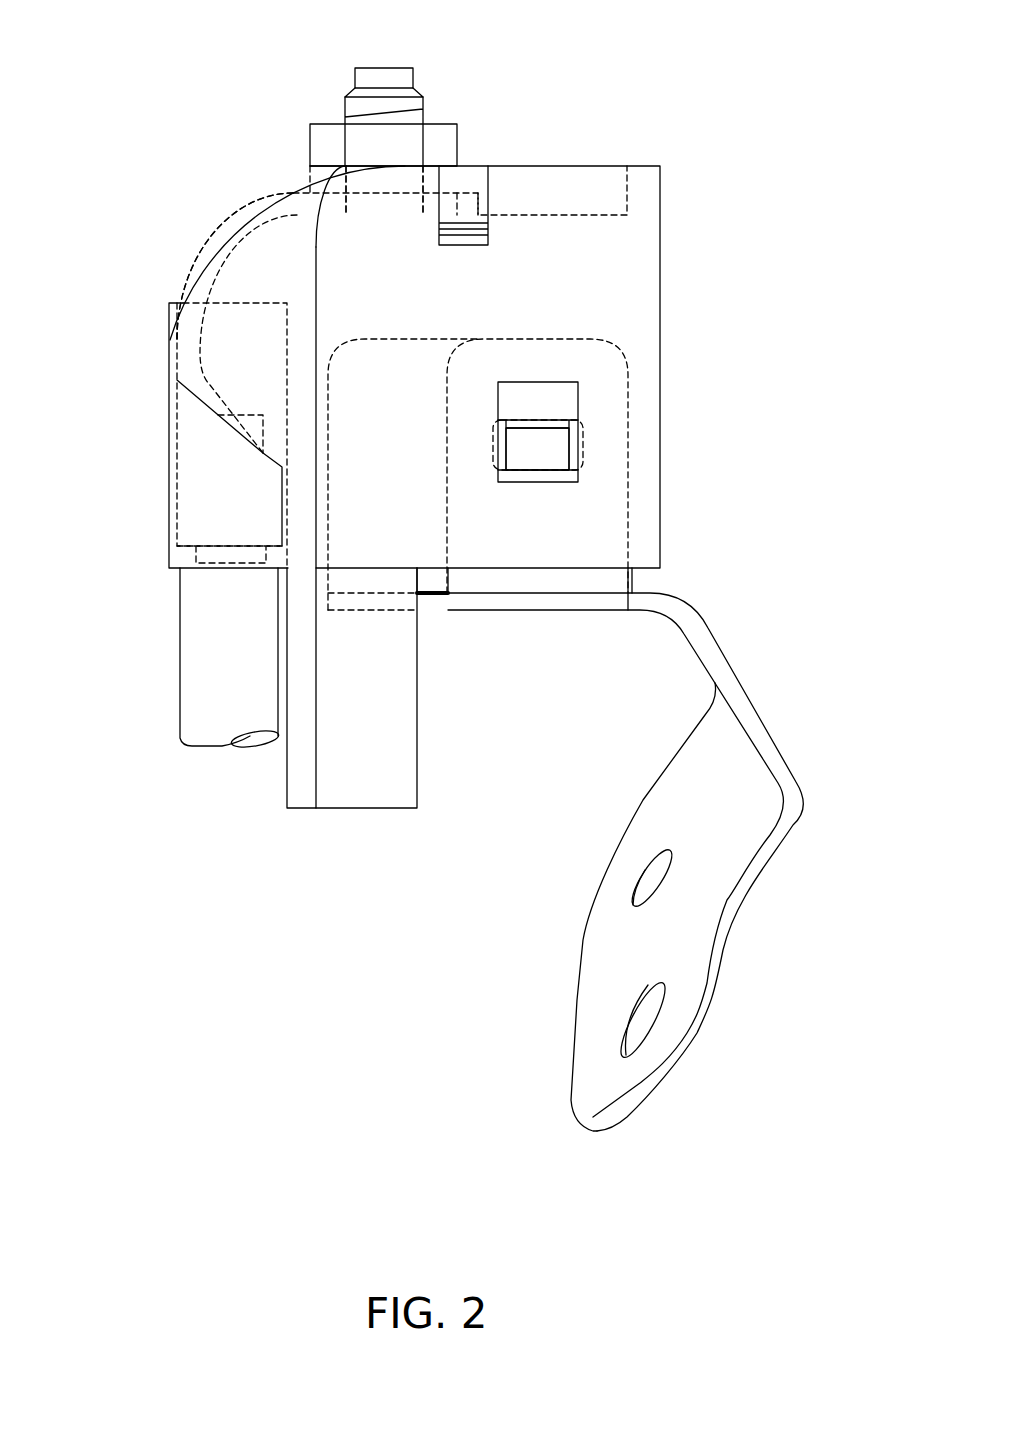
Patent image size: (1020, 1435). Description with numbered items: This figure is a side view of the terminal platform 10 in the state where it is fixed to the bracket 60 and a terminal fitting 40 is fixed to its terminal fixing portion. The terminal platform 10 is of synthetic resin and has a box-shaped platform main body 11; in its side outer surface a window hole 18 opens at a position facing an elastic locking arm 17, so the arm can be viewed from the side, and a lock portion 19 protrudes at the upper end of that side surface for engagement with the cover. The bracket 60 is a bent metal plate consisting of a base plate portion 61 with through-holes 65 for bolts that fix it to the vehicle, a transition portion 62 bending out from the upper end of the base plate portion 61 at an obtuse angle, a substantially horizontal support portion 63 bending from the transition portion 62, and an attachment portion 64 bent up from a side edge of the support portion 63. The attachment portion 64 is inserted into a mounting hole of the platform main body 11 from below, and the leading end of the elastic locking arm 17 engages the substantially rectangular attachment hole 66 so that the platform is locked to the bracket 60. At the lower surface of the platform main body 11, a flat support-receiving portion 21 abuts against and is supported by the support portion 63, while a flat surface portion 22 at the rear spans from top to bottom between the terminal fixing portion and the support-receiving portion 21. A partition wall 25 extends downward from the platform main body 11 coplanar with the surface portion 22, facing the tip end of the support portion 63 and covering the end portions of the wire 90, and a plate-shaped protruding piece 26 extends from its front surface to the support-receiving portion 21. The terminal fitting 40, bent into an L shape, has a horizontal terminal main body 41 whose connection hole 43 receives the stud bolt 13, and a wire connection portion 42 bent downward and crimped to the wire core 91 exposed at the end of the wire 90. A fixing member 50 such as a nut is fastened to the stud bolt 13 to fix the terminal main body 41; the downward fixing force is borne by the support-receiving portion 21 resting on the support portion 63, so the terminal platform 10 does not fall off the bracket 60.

The terminal platform 10 is at (456, 349).
The platform main body 11 is at (660, 273).
The stud bolt 13 is at (378, 68).
The elastic locking arm 17 is at (555, 462).
The window hole 18 is at (618, 421).
The lock portion 19 is at (487, 238).
The support-receiving portion 21 is at (250, 723).
The surface portion 22 is at (282, 522).
The partition wall 25 is at (292, 784).
The protruding piece 26 is at (350, 802).
The terminal fitting 40 is at (174, 380).
The terminal main body 41 is at (450, 199).
The wire connection portion 42 is at (187, 417).
The connection hole 43 is at (418, 204).
The fixing member 50 is at (323, 130).
The bracket 60 is at (629, 854).
The base plate portion 61 is at (604, 907).
The transition portion 62 is at (722, 668).
The support portion 63 is at (440, 605).
The attachment portion 64 is at (602, 577).
The through-hole 65 is at (647, 883).
The attachment hole 66 is at (545, 420).
The wire 90 is at (180, 686).
The wire core 91 is at (247, 415).